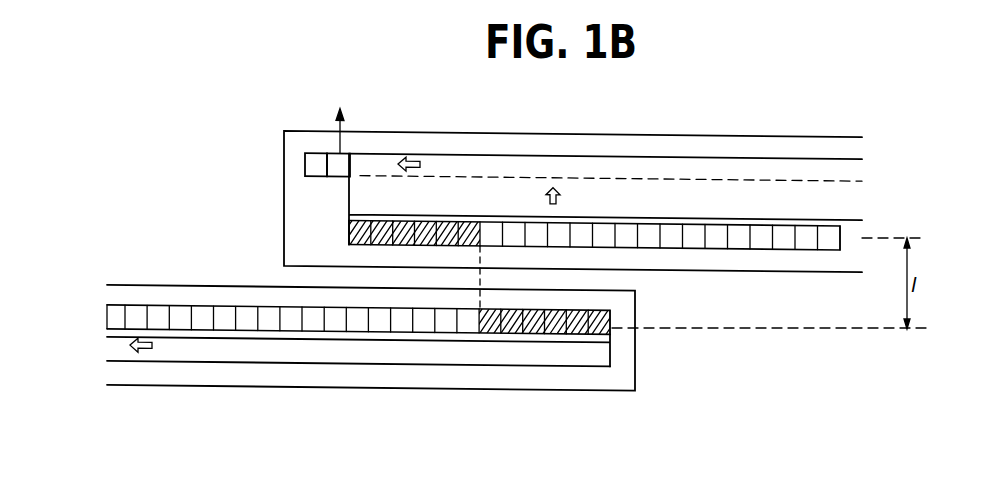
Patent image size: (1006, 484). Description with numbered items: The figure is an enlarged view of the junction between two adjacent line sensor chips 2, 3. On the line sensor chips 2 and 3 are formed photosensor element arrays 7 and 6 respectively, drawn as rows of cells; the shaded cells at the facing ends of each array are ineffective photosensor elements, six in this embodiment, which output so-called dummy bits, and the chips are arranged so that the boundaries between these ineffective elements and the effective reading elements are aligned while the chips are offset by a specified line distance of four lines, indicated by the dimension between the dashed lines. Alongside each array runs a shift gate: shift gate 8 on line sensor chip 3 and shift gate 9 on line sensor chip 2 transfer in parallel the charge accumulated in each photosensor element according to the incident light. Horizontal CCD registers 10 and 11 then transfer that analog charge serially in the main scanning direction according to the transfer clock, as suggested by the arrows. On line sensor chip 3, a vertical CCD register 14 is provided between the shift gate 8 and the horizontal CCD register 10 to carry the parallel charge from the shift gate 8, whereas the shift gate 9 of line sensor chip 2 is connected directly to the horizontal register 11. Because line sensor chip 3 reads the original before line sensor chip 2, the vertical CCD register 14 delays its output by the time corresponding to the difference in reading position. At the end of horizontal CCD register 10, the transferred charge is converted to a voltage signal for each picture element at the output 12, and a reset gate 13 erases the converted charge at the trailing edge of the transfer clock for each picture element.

The line sensor chip 2 is at (370, 386).
The line sensor chip 3 is at (620, 133).
The photosensor element array 6 is at (349, 237).
The photosensor element array 7 is at (600, 312).
The shift gate 8 is at (349, 215).
The shift gate 9 is at (632, 341).
The horizontal CCD register 10 is at (801, 165).
The horizontal CCD register 11 is at (218, 357).
The output 12 is at (332, 152).
The reset gate 13 is at (305, 163).
The vertical CCD register 14 is at (860, 195).